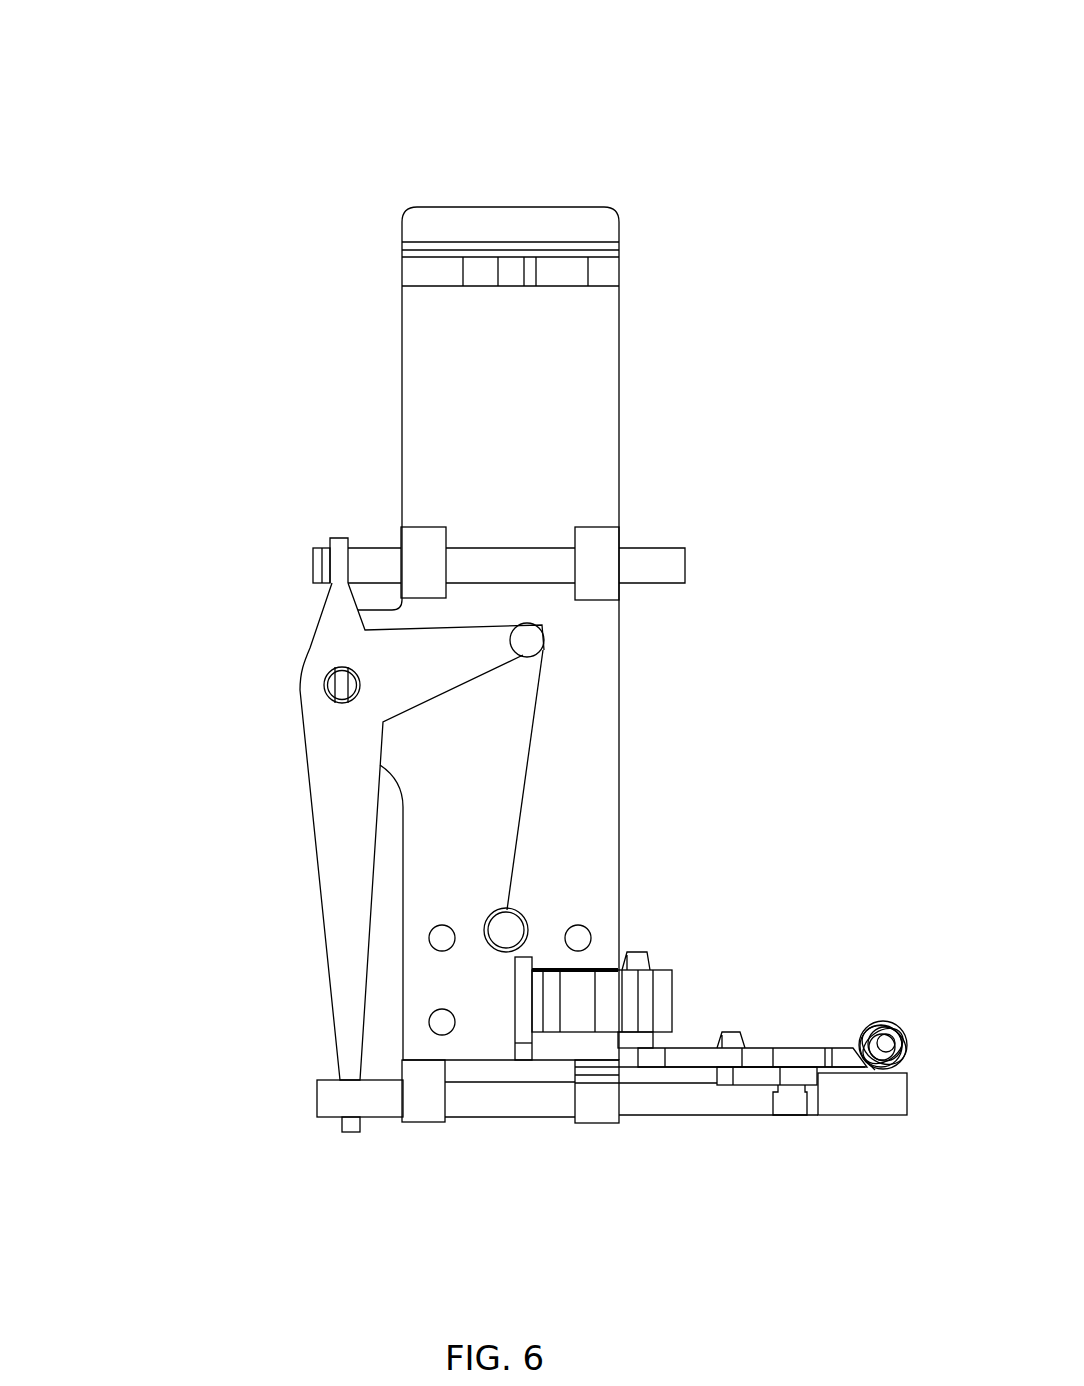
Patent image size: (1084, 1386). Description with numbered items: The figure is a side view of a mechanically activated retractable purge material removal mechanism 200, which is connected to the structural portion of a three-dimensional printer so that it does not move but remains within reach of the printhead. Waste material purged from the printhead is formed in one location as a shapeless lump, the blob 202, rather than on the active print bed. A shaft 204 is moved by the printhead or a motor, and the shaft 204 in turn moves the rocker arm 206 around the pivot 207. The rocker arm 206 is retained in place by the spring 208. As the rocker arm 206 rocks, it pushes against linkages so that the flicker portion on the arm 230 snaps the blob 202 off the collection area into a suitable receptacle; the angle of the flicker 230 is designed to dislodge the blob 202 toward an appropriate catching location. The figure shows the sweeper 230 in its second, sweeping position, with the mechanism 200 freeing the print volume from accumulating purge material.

The mechanically activated retractable purge material removal mechanism 200 is at (82, 0).
The blob 202 is at (883, 1022).
The shaft 204 is at (672, 560).
The rocker arm 206 is at (332, 841).
The pivot 207 is at (342, 685).
The spring 208 is at (530, 765).
The flicker 230 is at (806, 1058).